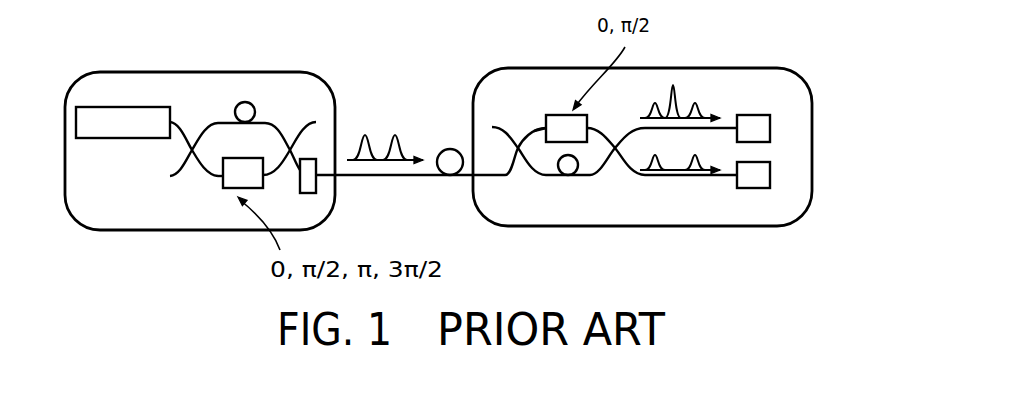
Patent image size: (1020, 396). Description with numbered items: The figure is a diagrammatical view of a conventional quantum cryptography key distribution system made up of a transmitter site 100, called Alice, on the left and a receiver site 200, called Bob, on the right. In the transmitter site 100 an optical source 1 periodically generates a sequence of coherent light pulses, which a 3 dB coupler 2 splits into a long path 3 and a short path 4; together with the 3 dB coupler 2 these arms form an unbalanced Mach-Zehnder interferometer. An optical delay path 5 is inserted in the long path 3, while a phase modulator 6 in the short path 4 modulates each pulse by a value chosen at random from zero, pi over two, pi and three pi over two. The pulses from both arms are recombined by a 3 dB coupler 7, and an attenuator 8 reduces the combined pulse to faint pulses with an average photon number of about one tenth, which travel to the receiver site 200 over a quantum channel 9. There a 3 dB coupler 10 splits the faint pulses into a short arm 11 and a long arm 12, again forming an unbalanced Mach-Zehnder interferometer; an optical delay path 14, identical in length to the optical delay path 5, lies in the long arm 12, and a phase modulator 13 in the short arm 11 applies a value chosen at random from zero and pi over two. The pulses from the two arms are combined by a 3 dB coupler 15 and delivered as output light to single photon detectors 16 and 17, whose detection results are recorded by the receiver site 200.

The optical source 1 is at (86, 106).
The 3 dB coupler 2 is at (189, 145).
The long path 3 is at (228, 121).
The short path 4 is at (217, 176).
The optical delay path 5 is at (256, 108).
The phase modulator 6 is at (229, 159).
The 3 dB coupler 7 is at (298, 182).
The attenuator 8 is at (323, 170).
The quantum channel 9 is at (409, 178).
The 3 dB coupler 10 is at (515, 143).
The short arm 11 is at (535, 132).
The long arm 12 is at (543, 177).
The phase modulator 13 is at (558, 113).
The optical delay path 14 is at (567, 183).
The 3 dB coupler 15 is at (613, 143).
The single photon detector 16 is at (748, 115).
The single photon detector 17 is at (740, 191).
The transmitter site 100 is at (200, 169).
The receiver site 200 is at (642, 167).